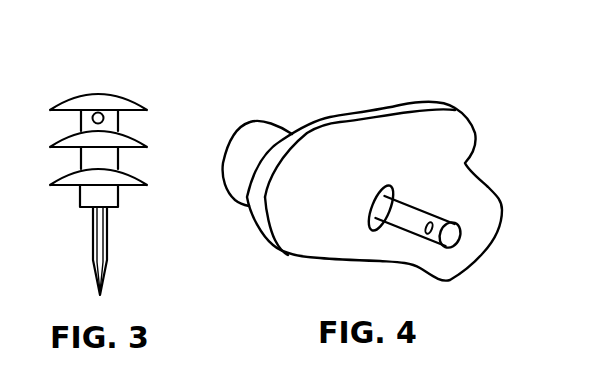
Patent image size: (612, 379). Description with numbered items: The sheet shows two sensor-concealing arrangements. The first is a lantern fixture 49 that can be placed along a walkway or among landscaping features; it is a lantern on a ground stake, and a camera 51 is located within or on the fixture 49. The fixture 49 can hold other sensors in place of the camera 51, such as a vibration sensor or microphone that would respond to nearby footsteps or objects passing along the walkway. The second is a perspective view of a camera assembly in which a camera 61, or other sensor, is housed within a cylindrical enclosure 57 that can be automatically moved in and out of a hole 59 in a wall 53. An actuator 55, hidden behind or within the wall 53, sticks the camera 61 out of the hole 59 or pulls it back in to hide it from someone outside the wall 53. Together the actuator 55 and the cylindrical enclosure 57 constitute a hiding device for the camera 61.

In FIG. 3, the lantern fixture 49 is at (114, 90).
In FIG. 3, the camera 51 is at (93, 119).
In FIG. 4, the wall 53 is at (477, 138).
In FIG. 4, the actuator 55 is at (274, 128).
In FIG. 4, the cylindrical enclosure 57 is at (415, 210).
In FIG. 4, the hole 59 is at (385, 187).
In FIG. 4, the camera 61 is at (425, 232).